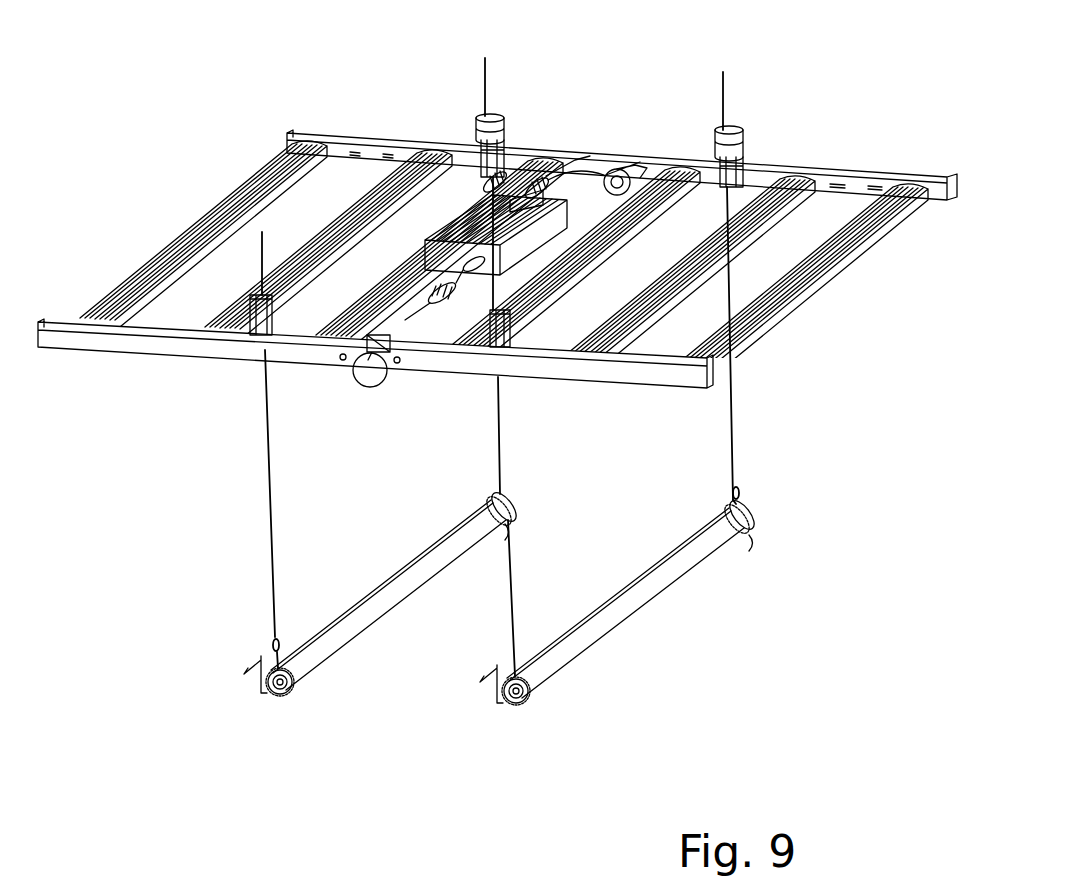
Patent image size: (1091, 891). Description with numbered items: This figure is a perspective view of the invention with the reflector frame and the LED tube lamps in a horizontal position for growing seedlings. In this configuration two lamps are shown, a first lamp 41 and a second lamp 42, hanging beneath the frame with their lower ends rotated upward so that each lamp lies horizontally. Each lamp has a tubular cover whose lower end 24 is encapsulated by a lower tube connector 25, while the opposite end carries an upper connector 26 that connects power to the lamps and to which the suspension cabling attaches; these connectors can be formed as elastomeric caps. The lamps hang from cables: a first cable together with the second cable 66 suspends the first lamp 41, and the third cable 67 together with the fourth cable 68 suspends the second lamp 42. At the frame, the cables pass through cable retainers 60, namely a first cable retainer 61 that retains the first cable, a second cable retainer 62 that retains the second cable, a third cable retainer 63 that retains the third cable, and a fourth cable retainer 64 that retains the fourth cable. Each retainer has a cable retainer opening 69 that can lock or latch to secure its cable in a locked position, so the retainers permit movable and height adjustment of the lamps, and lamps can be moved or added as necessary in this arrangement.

The cable retainers 60 is at (478, 120).
The first cable retainer 61 is at (750, 140).
The second cable retainer 62 is at (505, 125).
The third cable retainer 63 is at (493, 340).
The fourth cable retainer 64 is at (255, 318).
The second cable 66 is at (740, 438).
The third cable 67 is at (501, 425).
The fourth cable 68 is at (263, 572).
The cable retainer opening 69 is at (497, 113).
The lower tube connector 25 is at (516, 500).
The lower end 24 is at (503, 526).
The upper connector 26 is at (270, 700).
The first lamp 41 is at (613, 623).
The second lamp 42 is at (378, 600).